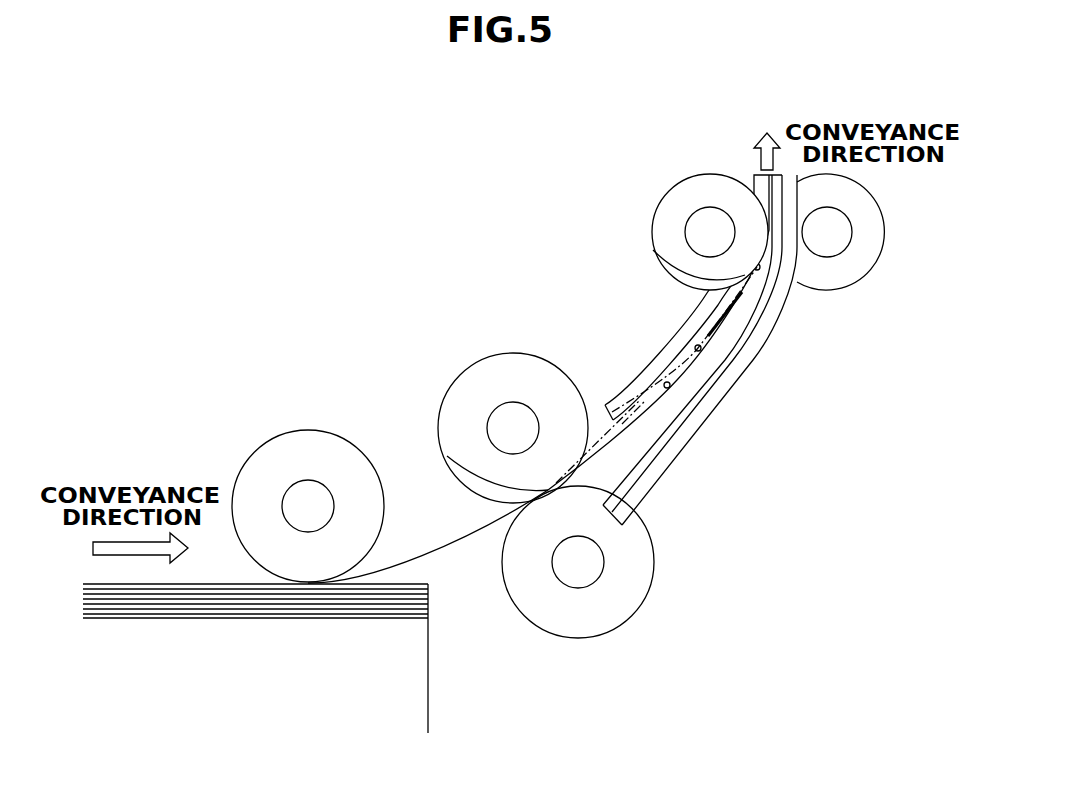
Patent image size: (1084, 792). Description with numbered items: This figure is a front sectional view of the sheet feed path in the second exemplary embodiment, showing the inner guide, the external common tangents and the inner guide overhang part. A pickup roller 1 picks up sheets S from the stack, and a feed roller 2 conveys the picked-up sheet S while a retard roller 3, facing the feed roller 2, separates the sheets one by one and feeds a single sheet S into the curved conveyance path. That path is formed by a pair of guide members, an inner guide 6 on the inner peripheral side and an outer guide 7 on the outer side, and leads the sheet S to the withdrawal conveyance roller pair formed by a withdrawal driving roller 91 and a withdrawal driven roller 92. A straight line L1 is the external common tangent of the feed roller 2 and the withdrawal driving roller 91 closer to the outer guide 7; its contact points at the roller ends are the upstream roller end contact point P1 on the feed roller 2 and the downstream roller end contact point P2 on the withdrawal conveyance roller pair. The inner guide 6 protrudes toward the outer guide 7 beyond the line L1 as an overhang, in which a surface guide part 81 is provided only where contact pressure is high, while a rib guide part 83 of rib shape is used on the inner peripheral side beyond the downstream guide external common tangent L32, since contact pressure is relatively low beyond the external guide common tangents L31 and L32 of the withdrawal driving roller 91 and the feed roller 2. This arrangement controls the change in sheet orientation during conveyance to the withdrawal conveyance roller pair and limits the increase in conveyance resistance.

The pickup roller 1 is at (305, 440).
The feed roller 2 is at (470, 390).
The retard roller 3 is at (640, 575).
The inner guide 6 is at (660, 363).
The outer guide 7 is at (712, 418).
The surface guide part 81 is at (705, 363).
The rib guide part 83 is at (720, 312).
The withdrawal driving roller 91 is at (682, 195).
The withdrawal driven roller 92 is at (868, 248).
The upstream roller end contact point P1 is at (447, 456).
The downstream roller end contact point P2 is at (653, 250).
The external common tangent L1 is at (603, 432).
The external common tangent L31 is at (630, 420).
The downstream guide external common tangent L32 is at (722, 296).
The sheet S is at (450, 548).